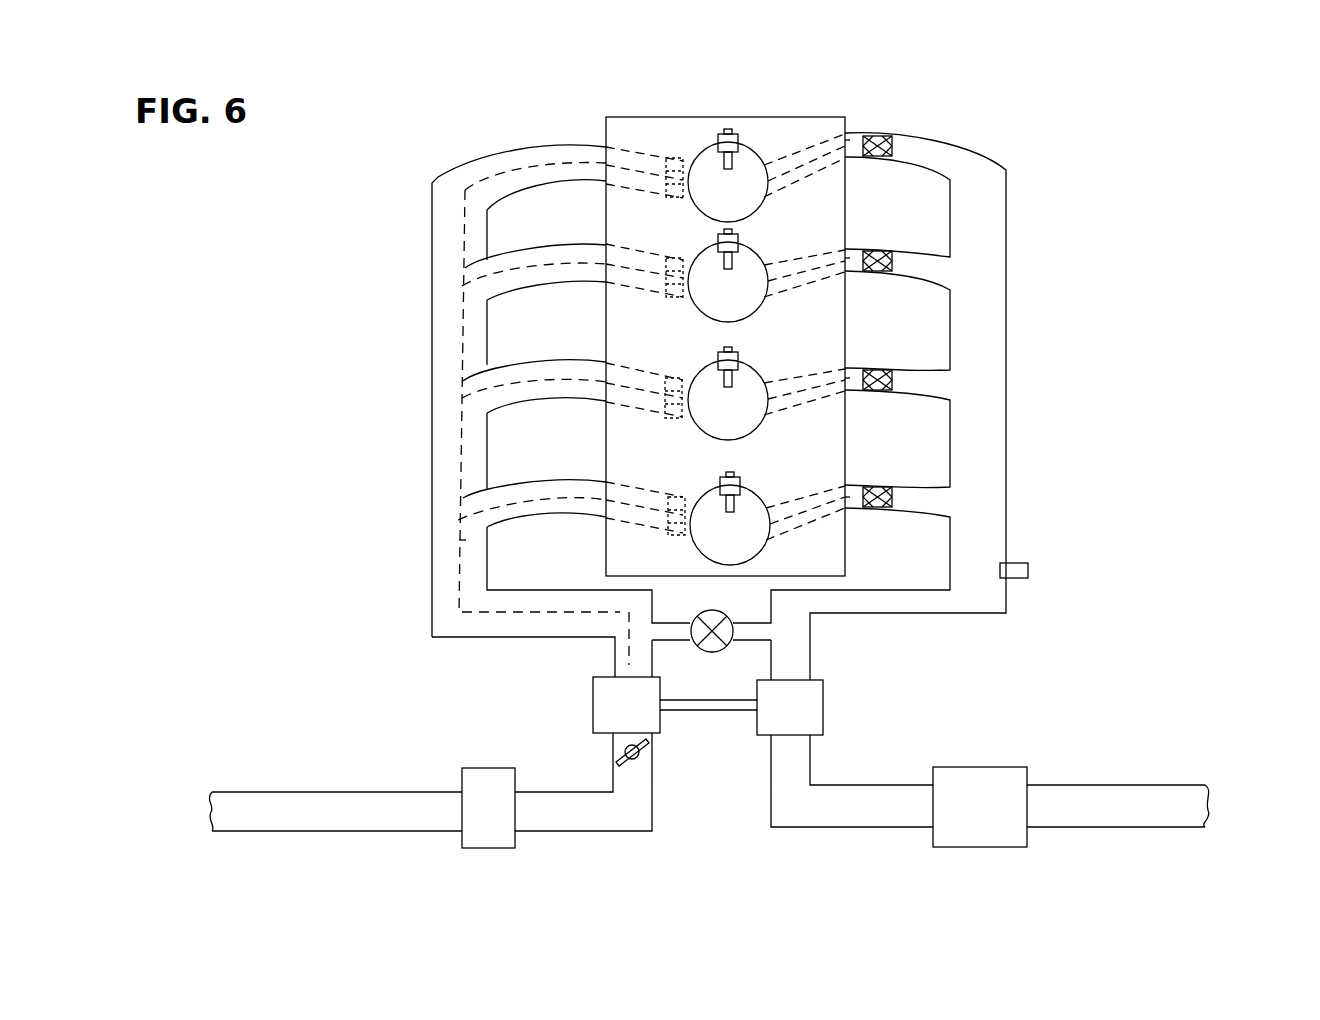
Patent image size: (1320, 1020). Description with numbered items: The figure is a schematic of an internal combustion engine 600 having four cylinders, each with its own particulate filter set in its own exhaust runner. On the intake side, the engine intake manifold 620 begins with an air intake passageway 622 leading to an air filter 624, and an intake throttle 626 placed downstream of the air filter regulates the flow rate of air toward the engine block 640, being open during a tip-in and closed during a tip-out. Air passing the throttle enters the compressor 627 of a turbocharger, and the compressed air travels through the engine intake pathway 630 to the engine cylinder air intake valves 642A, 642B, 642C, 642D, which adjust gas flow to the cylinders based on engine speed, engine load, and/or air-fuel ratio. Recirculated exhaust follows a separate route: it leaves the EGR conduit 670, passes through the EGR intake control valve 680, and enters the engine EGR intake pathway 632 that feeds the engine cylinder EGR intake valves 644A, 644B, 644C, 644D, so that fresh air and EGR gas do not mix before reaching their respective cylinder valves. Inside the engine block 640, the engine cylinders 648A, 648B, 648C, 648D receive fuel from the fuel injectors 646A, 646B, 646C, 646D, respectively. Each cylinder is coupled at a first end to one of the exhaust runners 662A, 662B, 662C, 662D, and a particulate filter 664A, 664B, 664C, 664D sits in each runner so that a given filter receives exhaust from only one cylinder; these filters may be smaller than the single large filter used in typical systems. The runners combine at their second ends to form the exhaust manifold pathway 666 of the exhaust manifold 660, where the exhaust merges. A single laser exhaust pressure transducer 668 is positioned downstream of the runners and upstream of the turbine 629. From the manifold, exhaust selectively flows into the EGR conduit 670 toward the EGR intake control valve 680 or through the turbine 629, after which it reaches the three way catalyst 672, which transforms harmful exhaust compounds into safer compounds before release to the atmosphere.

The internal combustion engine 600 is at (1192, 165).
The engine intake manifold 620 is at (408, 145).
The air intake passageway 622 is at (353, 792).
The air filter 624 is at (483, 768).
The intake throttle 626 is at (645, 758).
The compressor 627 is at (626, 705).
The turbine 629 is at (790, 707).
The engine intake pathway 630 is at (460, 612).
The engine EGR intake pathway 632 is at (460, 555).
The engine block 640 is at (682, 117).
The engine cylinder air intake valve 642A is at (667, 163).
The engine cylinder air intake valve 642B is at (671, 262).
The engine cylinder air intake valve 642C is at (670, 383).
The engine cylinder air intake valve 642D is at (671, 500).
The engine cylinder EGR intake valve 644A is at (672, 192).
The engine cylinder EGR intake valve 644B is at (672, 297).
The engine cylinder EGR intake valve 644C is at (668, 412).
The engine cylinder EGR intake valve 644D is at (672, 535).
The fuel injector 646A is at (740, 140).
The fuel injector 646B is at (740, 241).
The fuel injector 646C is at (738, 357).
The fuel injector 646D is at (742, 475).
The engine cylinder 648A is at (760, 205).
The engine cylinder 648B is at (760, 300).
The engine cylinder 648C is at (760, 420).
The engine cylinder 648D is at (760, 548).
The exhaust manifold 660 is at (1111, 397).
The exhaust runner 662A is at (938, 172).
The exhaust runner 662B is at (938, 290).
The exhaust runner 662C is at (940, 398).
The exhaust runner 662D is at (920, 517).
The particulate filter 664A is at (873, 134).
The particulate filter 664B is at (870, 249).
The particulate filter 664C is at (872, 370).
The particulate filter 664D is at (873, 487).
The exhaust manifold pathway 666 is at (1007, 297).
The laser exhaust pressure transducer 668 is at (1030, 563).
The EGR conduit 670 is at (668, 620).
The three way catalyst 672 is at (990, 767).
The EGR intake control valve 680 is at (714, 652).